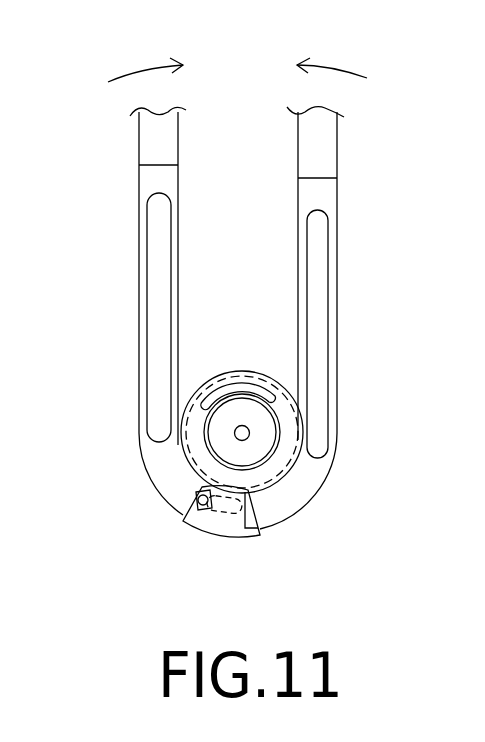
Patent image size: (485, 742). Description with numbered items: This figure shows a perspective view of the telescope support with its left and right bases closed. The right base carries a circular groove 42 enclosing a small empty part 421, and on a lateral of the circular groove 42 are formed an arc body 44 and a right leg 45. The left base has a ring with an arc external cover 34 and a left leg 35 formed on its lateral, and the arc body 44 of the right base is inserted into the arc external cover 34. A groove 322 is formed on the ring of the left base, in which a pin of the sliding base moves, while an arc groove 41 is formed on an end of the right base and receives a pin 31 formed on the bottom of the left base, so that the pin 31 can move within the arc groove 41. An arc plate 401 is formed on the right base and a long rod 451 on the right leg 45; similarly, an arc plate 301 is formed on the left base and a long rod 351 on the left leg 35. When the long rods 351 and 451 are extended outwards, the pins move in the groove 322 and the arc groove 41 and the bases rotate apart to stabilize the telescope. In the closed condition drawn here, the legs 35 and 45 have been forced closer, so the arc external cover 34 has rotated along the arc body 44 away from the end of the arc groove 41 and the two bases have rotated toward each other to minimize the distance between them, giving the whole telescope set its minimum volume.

The left leg 35 is at (126, 276).
The long rod 351 is at (150, 145).
The arc plate 301 is at (158, 372).
The right leg 45 is at (311, 282).
The long rod 451 is at (310, 147).
The arc plate 401 is at (313, 243).
The arc body 44 is at (283, 503).
The circular groove 42 is at (197, 413).
The small empty part 421 is at (237, 436).
The groove 322 is at (263, 390).
The arc external cover 34 is at (223, 534).
The pin 31 is at (186, 518).
The arc groove 41 is at (225, 522).